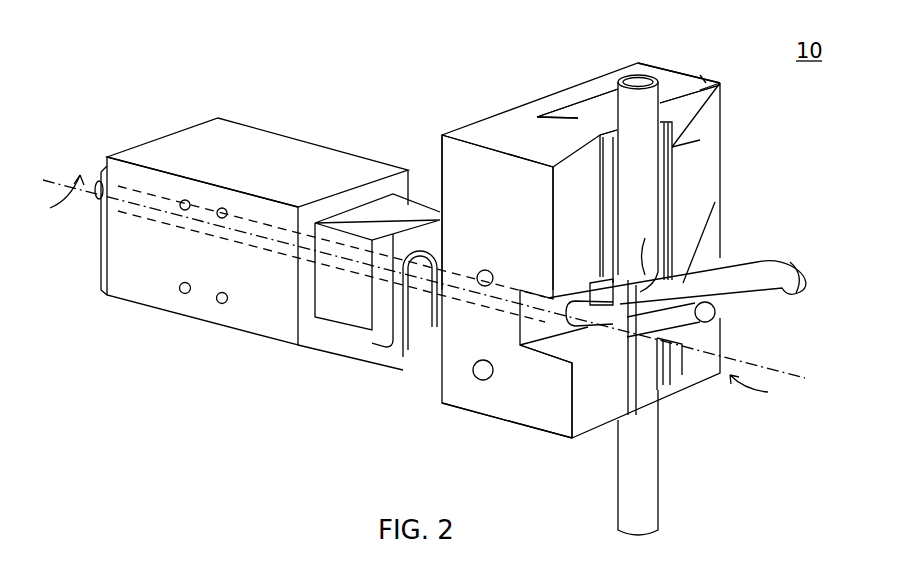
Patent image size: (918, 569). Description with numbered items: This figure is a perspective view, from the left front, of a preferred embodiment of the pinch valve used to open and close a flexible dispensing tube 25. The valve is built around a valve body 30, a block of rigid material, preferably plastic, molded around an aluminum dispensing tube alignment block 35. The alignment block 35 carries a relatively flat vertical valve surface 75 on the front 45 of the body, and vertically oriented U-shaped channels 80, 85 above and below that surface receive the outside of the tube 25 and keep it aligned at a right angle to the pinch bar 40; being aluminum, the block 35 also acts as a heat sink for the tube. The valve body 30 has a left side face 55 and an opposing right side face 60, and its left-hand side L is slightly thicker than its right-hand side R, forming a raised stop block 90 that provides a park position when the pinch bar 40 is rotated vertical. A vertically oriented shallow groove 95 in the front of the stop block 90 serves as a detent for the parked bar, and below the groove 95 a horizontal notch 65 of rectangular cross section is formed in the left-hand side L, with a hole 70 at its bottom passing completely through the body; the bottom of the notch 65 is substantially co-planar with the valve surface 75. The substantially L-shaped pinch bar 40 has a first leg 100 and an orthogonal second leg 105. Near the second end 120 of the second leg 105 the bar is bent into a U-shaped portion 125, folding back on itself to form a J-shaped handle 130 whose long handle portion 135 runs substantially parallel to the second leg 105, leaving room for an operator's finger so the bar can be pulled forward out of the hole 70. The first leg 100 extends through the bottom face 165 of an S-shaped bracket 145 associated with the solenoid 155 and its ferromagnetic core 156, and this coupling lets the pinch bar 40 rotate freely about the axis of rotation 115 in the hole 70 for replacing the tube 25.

The dispensing tube 25 is at (658, 500).
The valve body 30 is at (703, 157).
The dispensing tube alignment block 35 is at (578, 118).
The pinch bar 40 is at (705, 297).
The front of the valve body 45 is at (764, 389).
The left side face 55 is at (465, 400).
The right side face 60 is at (700, 75).
The horizontal notch 65 is at (572, 347).
The hole 70 is at (523, 283).
The flat vertical surface 75 is at (640, 413).
The U-shaped channel 80 is at (721, 84).
The U-shaped channel 85 is at (668, 394).
The raised stop block 90 is at (512, 123).
The shallow groove 95 is at (610, 183).
The first leg 100 is at (275, 255).
The second leg 105 is at (717, 215).
The axis of rotation 115 is at (42, 180).
The second end of the second leg 120 is at (752, 263).
The U-shaped portion 125 is at (802, 283).
The J-shaped handle 130 is at (765, 305).
The long handle portion 135 is at (715, 318).
The bracket 145 is at (415, 358).
The solenoid 155 is at (220, 118).
The ferromagnetic core 156 is at (355, 215).
The bottom face of the bracket 165 is at (355, 360).
The left-hand side L is at (580, 225).
The right-hand side R is at (700, 128).